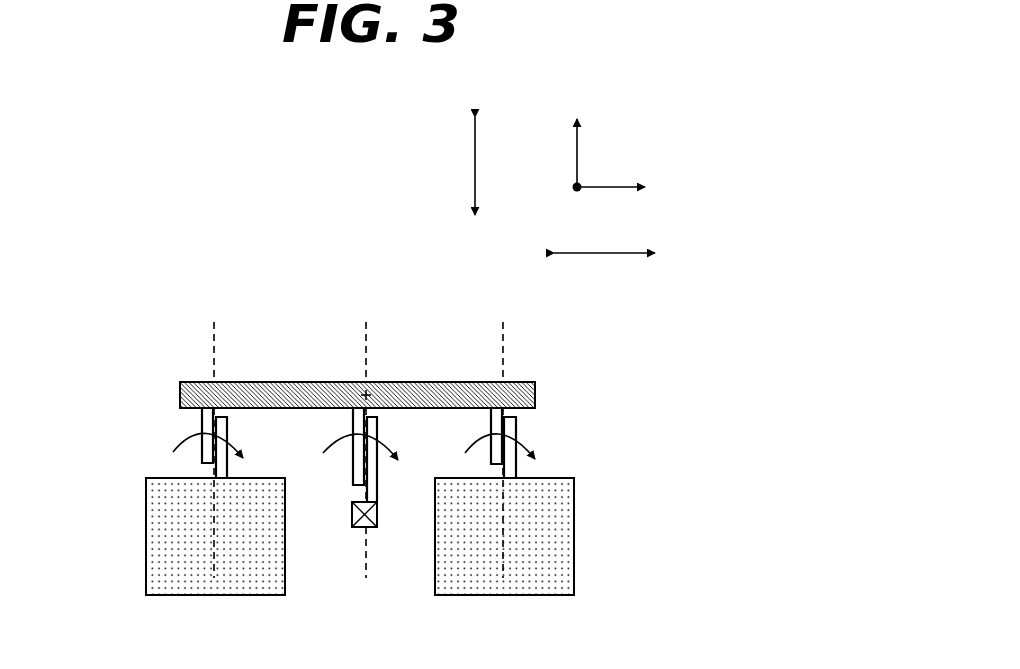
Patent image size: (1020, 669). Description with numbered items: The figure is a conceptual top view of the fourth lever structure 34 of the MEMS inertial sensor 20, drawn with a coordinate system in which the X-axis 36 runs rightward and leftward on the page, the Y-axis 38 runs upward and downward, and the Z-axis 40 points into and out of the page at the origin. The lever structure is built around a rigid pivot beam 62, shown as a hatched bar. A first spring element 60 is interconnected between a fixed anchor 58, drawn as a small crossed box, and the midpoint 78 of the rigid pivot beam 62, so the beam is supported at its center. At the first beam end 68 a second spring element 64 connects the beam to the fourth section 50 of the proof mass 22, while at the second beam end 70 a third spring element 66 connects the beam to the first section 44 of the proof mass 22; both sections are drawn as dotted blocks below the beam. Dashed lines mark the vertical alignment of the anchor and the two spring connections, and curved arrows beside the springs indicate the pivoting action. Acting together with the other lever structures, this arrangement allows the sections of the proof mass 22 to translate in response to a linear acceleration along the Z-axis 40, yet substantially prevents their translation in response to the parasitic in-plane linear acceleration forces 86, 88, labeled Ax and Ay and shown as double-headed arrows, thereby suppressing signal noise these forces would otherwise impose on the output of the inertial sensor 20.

The inertial sensor 20 is at (204, 659).
The proof mass 22 is at (146, 533).
The fourth lever structure 34 is at (280, 339).
The X-axis 36 is at (610, 185).
The Y-axis 38 is at (575, 158).
The Z-axis 40 is at (580, 192).
The first section 44 is at (555, 579).
The fourth section 50 is at (269, 579).
The anchor 58 is at (369, 515).
The first spring element 60 is at (352, 458).
The rigid pivot beam 62 is at (193, 381).
The second spring element 64 is at (202, 422).
The third spring element 66 is at (517, 424).
The first beam end 68 is at (180, 395).
The second beam end 70 is at (536, 395).
The midpoint 78 is at (370, 394).
The linear acceleration force Ax 86 is at (593, 254).
The linear acceleration force Ay 88 is at (474, 155).